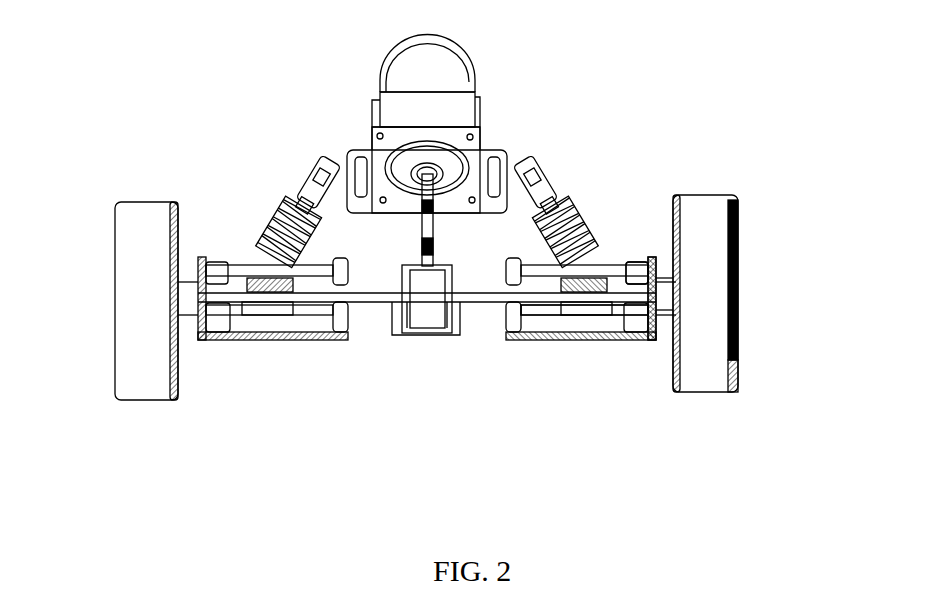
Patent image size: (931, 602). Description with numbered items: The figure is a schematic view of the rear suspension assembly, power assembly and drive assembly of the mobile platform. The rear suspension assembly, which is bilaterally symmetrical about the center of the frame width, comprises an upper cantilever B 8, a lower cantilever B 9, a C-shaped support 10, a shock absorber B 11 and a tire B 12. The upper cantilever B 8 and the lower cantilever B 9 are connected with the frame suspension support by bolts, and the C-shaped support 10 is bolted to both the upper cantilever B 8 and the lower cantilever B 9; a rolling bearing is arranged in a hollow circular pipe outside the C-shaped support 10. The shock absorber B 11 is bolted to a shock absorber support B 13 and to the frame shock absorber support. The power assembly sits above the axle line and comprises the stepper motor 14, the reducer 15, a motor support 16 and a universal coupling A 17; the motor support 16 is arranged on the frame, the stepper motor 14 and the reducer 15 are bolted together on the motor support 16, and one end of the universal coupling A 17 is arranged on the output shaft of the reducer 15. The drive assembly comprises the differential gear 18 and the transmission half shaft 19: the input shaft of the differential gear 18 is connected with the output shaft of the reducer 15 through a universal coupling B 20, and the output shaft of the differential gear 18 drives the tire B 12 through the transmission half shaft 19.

The upper cantilever B 8 is at (607, 260).
The lower cantilever B 9 is at (532, 322).
The C-shaped support 10 is at (657, 257).
The shock absorber B 11 is at (547, 180).
The tire B 12 is at (697, 307).
The shock absorber support B 13 is at (583, 305).
The stepper motor 14 is at (402, 70).
The reducer 15 is at (408, 117).
The motor support 16 is at (398, 140).
The universal coupling A 17 is at (393, 177).
The differential gear 18 is at (425, 303).
The transmission half shaft 19 is at (481, 303).
The universal coupling B 20 is at (397, 283).